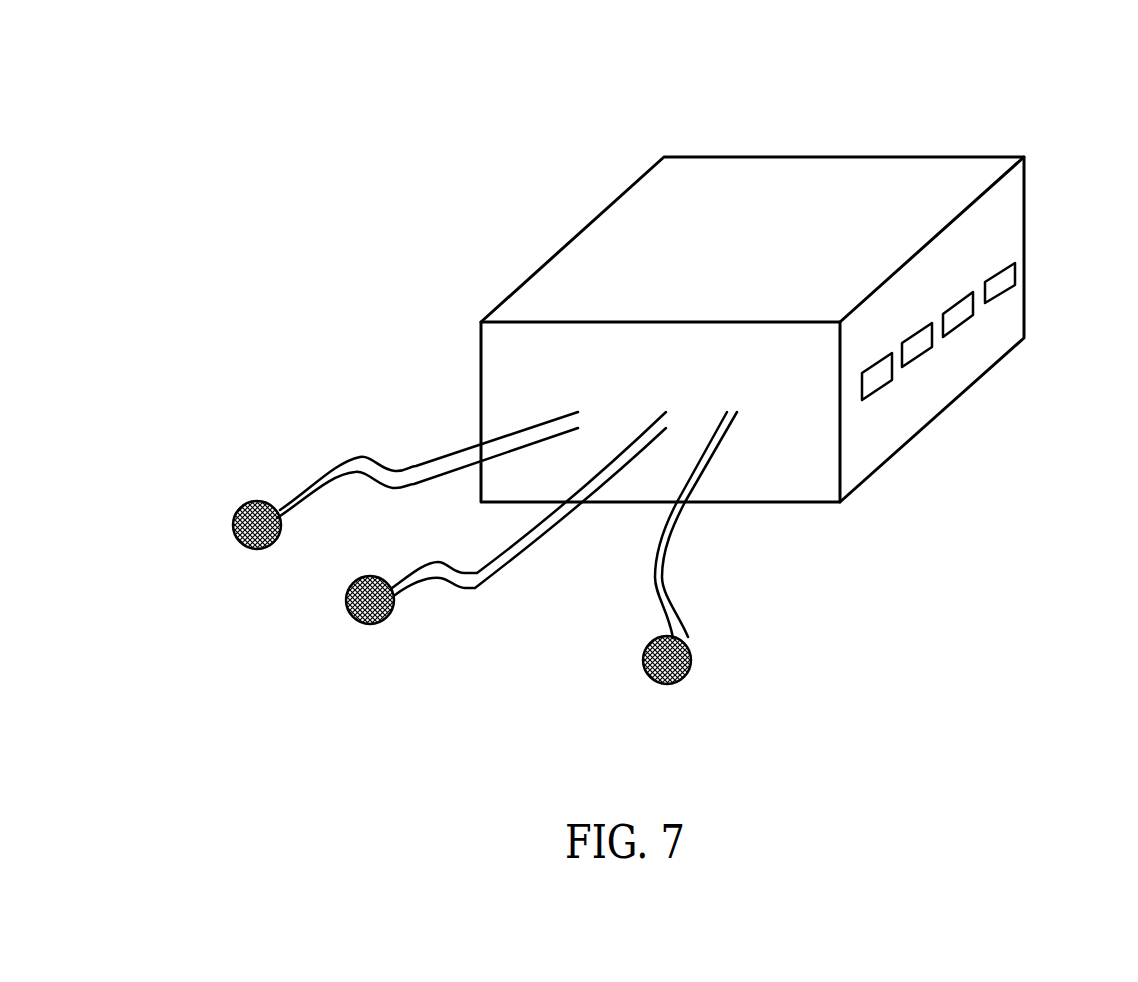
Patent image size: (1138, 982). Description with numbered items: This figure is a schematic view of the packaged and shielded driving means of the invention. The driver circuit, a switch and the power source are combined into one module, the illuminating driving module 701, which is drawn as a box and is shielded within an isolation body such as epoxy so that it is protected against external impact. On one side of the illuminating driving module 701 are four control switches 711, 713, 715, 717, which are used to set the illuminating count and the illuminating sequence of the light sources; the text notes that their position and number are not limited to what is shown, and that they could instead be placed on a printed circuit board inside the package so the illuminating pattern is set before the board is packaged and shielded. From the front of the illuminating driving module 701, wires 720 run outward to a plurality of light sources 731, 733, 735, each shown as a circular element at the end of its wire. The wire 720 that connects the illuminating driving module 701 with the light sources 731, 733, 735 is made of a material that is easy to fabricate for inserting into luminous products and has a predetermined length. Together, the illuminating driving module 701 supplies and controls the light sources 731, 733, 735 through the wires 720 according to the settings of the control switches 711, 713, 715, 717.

The illuminating driving module 701 is at (740, 160).
The control switch 711 is at (880, 390).
The control switch 713 is at (928, 360).
The control switch 715 is at (963, 340).
The control switch 717 is at (995, 307).
The wire 720 is at (410, 468).
The light source 731 is at (234, 533).
The light source 733 is at (352, 617).
The light source 735 is at (648, 675).